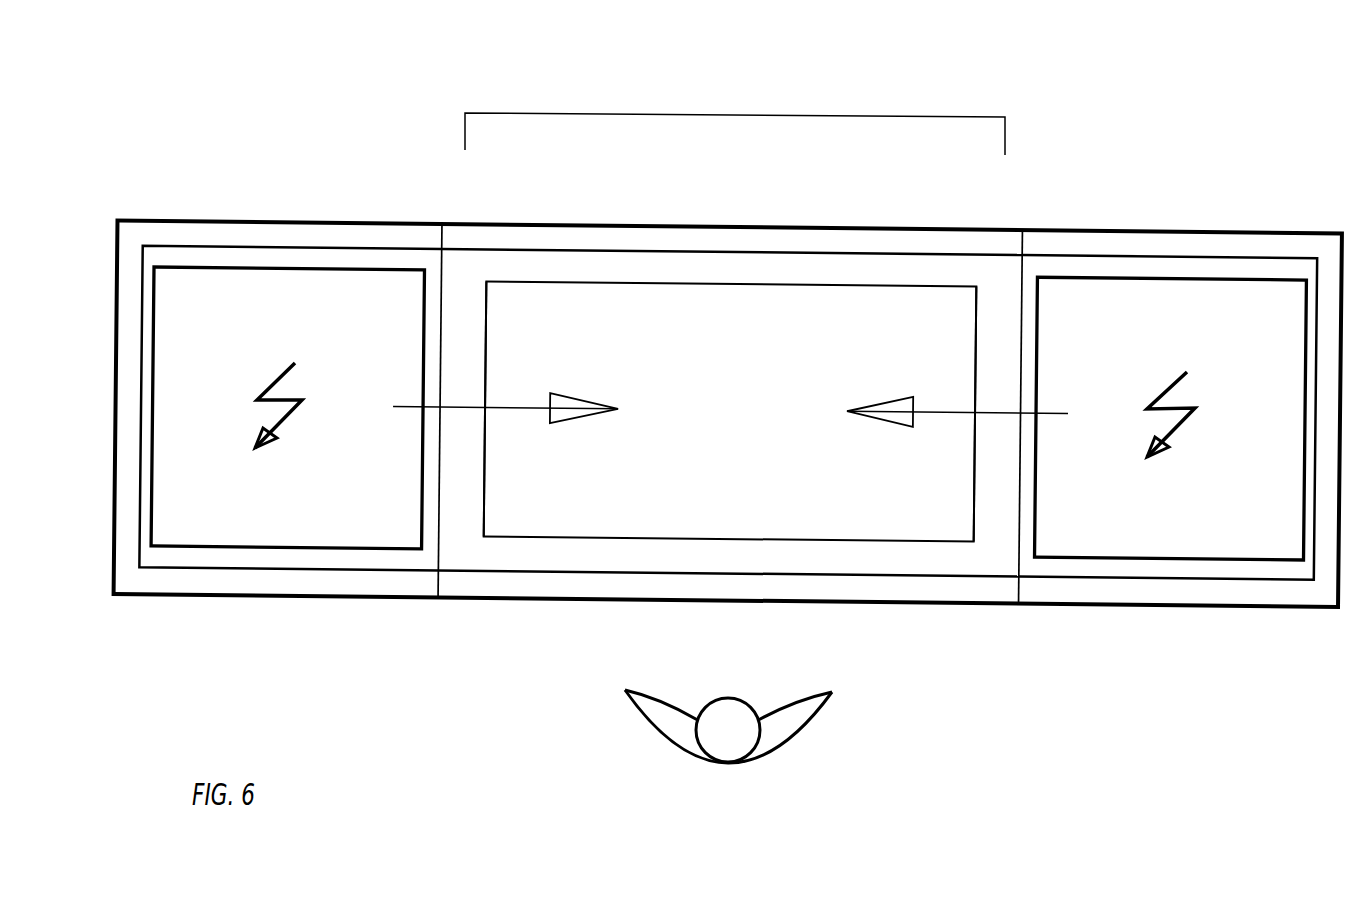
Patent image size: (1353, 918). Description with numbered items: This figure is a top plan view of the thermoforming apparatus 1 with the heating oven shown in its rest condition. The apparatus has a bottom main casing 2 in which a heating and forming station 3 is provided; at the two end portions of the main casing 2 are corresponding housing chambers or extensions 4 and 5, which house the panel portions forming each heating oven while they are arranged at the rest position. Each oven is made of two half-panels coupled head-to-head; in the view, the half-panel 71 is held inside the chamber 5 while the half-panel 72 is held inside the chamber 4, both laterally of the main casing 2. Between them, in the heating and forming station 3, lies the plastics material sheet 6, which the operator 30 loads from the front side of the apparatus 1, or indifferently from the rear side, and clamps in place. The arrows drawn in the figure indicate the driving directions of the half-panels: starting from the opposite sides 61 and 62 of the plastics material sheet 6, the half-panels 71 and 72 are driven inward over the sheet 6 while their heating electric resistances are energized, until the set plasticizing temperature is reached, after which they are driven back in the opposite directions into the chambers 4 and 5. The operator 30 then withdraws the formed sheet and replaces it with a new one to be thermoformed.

The thermoforming apparatus 1 is at (721, 114).
The bottom main casing 2 is at (643, 235).
The heating and forming station 3 is at (918, 285).
The housing chamber 4 is at (1262, 242).
The housing chamber 5 is at (352, 233).
The plastics material sheet 6 is at (805, 268).
The side of the plastics material sheet 61 is at (485, 483).
The side of the plastics material sheet 62 is at (975, 505).
The half-panel 71 is at (207, 317).
The half-panel 72 is at (1089, 325).
The operator 30 is at (728, 738).